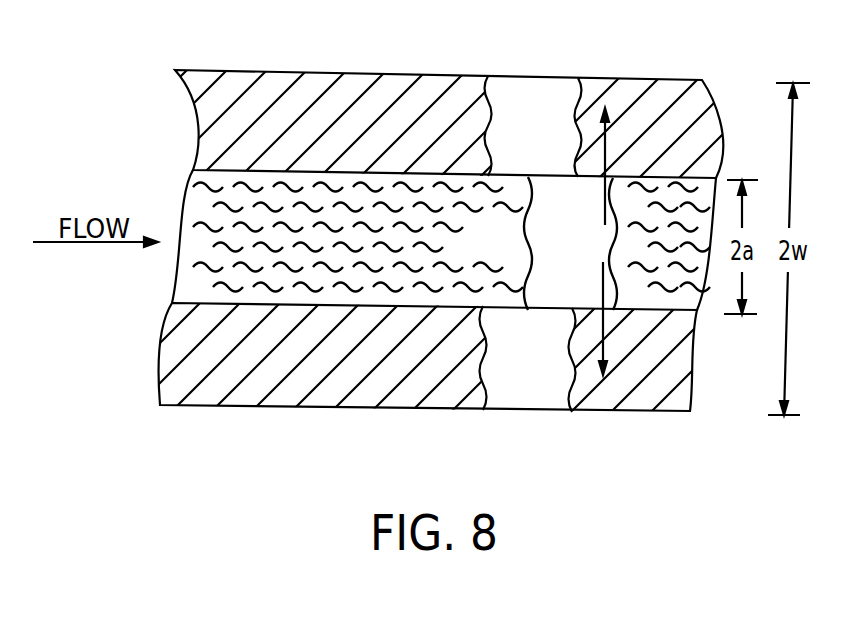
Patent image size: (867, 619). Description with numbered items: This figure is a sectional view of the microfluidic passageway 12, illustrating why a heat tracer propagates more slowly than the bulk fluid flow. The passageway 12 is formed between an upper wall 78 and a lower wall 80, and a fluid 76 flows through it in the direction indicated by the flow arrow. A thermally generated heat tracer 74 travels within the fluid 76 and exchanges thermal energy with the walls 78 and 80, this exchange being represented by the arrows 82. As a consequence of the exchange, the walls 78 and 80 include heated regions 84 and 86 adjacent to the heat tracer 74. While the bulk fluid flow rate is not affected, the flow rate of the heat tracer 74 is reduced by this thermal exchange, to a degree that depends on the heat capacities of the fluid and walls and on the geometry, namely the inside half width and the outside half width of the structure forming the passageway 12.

The microfluidic passageway 12 is at (187, 187).
The heat tracer 74 is at (585, 252).
The fluid 76 is at (491, 252).
The wall 78 is at (240, 77).
The wall 80 is at (202, 397).
The arrows 82 is at (615, 130).
The heated region 84 is at (552, 83).
The heated region 86 is at (543, 403).